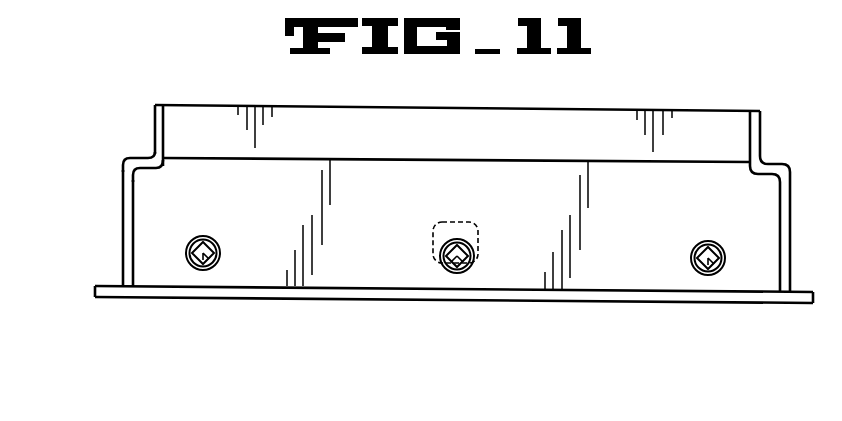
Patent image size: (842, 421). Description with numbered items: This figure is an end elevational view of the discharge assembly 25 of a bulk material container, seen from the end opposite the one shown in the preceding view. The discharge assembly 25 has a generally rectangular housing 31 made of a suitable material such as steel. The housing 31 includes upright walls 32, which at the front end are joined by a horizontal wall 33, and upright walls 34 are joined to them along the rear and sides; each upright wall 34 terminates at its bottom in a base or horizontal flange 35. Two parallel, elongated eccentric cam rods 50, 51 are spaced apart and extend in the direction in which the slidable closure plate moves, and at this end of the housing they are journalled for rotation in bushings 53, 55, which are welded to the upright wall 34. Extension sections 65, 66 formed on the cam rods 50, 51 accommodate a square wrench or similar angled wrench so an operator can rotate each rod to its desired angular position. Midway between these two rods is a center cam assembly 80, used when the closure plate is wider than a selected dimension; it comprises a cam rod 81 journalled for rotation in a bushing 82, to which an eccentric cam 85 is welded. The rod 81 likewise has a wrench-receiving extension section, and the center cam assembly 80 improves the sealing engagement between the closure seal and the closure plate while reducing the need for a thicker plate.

The discharge assembly 25 is at (500, 310).
The housing 31 is at (86, 301).
The upright walls 32 is at (155, 118).
The horizontal wall 33 is at (131, 158).
The upright wall 34 is at (122, 210).
The base or horizontal flange 35 is at (107, 300).
The cam rod 50 is at (721, 275).
The cam rod 51 is at (225, 236).
The bushing 53 is at (694, 252).
The bushing 55 is at (192, 240).
The extension section 65 is at (720, 247).
The extension section 66 is at (207, 269).
The center cam assembly 80 is at (481, 244).
The cam rod 81 is at (444, 260).
The bushing 82 is at (449, 244).
The eccentric cam 85 is at (478, 222).